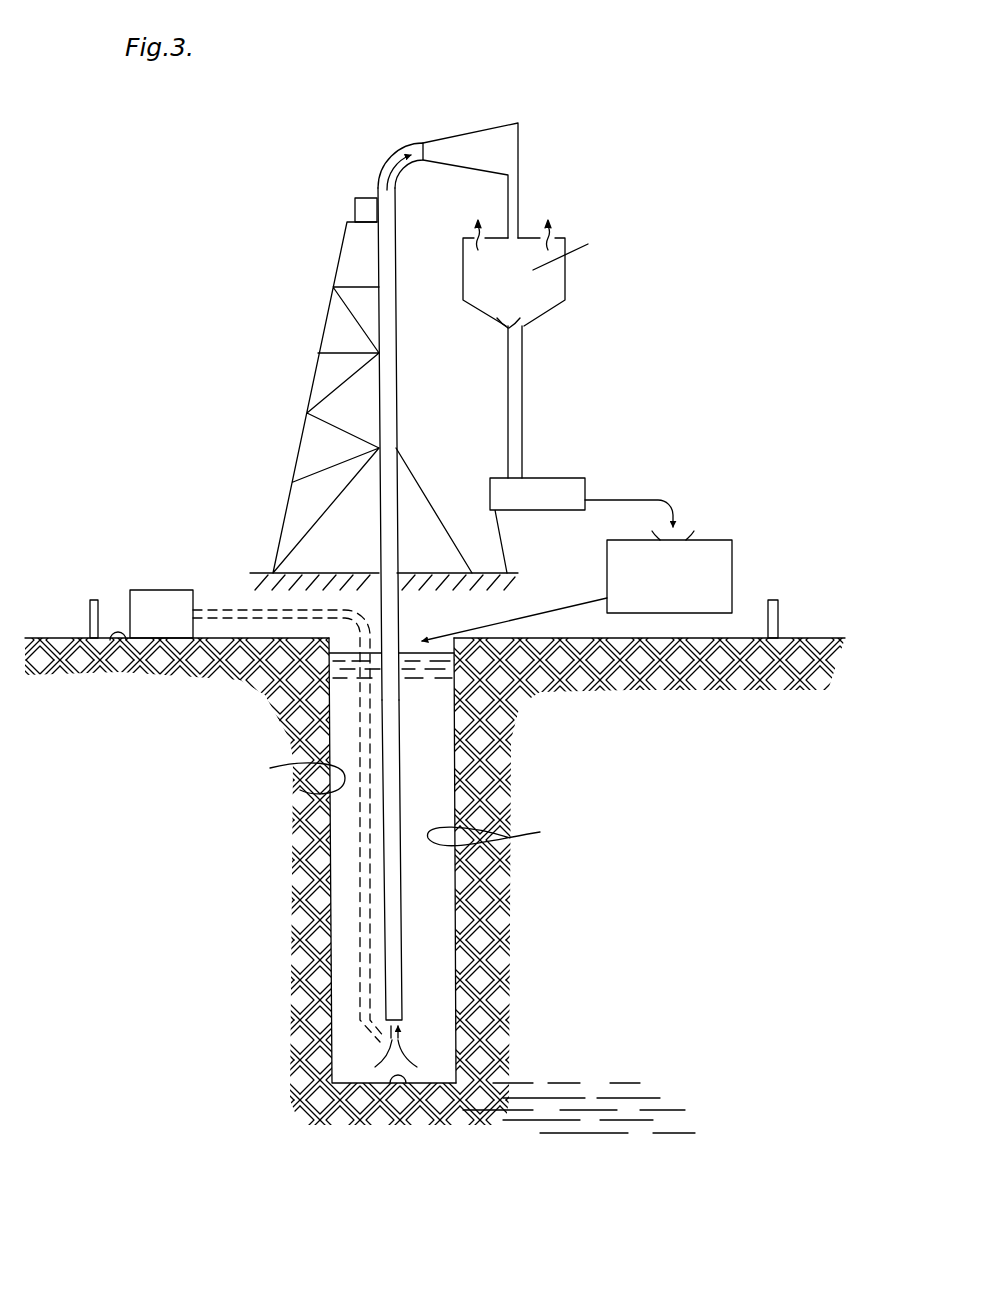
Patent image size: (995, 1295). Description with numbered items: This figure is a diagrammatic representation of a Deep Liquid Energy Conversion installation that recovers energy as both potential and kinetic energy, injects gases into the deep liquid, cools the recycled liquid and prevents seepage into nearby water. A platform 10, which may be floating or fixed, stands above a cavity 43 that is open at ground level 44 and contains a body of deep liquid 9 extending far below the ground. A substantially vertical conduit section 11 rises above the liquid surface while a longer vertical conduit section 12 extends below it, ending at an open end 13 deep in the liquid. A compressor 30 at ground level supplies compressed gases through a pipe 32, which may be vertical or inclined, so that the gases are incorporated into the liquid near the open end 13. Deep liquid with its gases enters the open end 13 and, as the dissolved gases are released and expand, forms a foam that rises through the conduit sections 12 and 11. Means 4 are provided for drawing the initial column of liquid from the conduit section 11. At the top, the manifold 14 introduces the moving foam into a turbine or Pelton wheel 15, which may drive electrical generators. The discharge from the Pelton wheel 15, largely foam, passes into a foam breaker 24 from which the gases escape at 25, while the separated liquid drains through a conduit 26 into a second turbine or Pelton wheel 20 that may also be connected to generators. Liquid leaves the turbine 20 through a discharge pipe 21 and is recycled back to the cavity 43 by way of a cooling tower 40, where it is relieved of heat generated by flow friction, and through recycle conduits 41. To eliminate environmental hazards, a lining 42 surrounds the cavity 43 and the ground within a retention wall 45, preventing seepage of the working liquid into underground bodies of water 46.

The means for drawing initial column of liquid 4 is at (355, 208).
The liquid 9 is at (297, 718).
The platform 10 is at (310, 374).
The vertical conduit section 11 is at (398, 400).
The vertical conduit section 12 is at (399, 903).
The open end 13 is at (389, 1016).
The manifold 14 is at (406, 149).
The Pelton wheel 15 is at (502, 125).
The turbine 20 is at (538, 478).
The discharge pipe 21 is at (623, 500).
The foam breaker 24 is at (565, 283).
The gas escape 25 is at (580, 249).
The conduit 26 is at (522, 390).
The compressor 30 is at (150, 590).
The pipe 32 is at (358, 845).
The cooling tower 40 is at (669, 547).
The recycle conduit 41 is at (566, 604).
The lining 42 is at (604, 637).
The cavity 43 is at (455, 758).
The ground level 44 is at (65, 636).
The retention wall 45 is at (91, 600).
The underground bodies of water 46 is at (588, 1093).